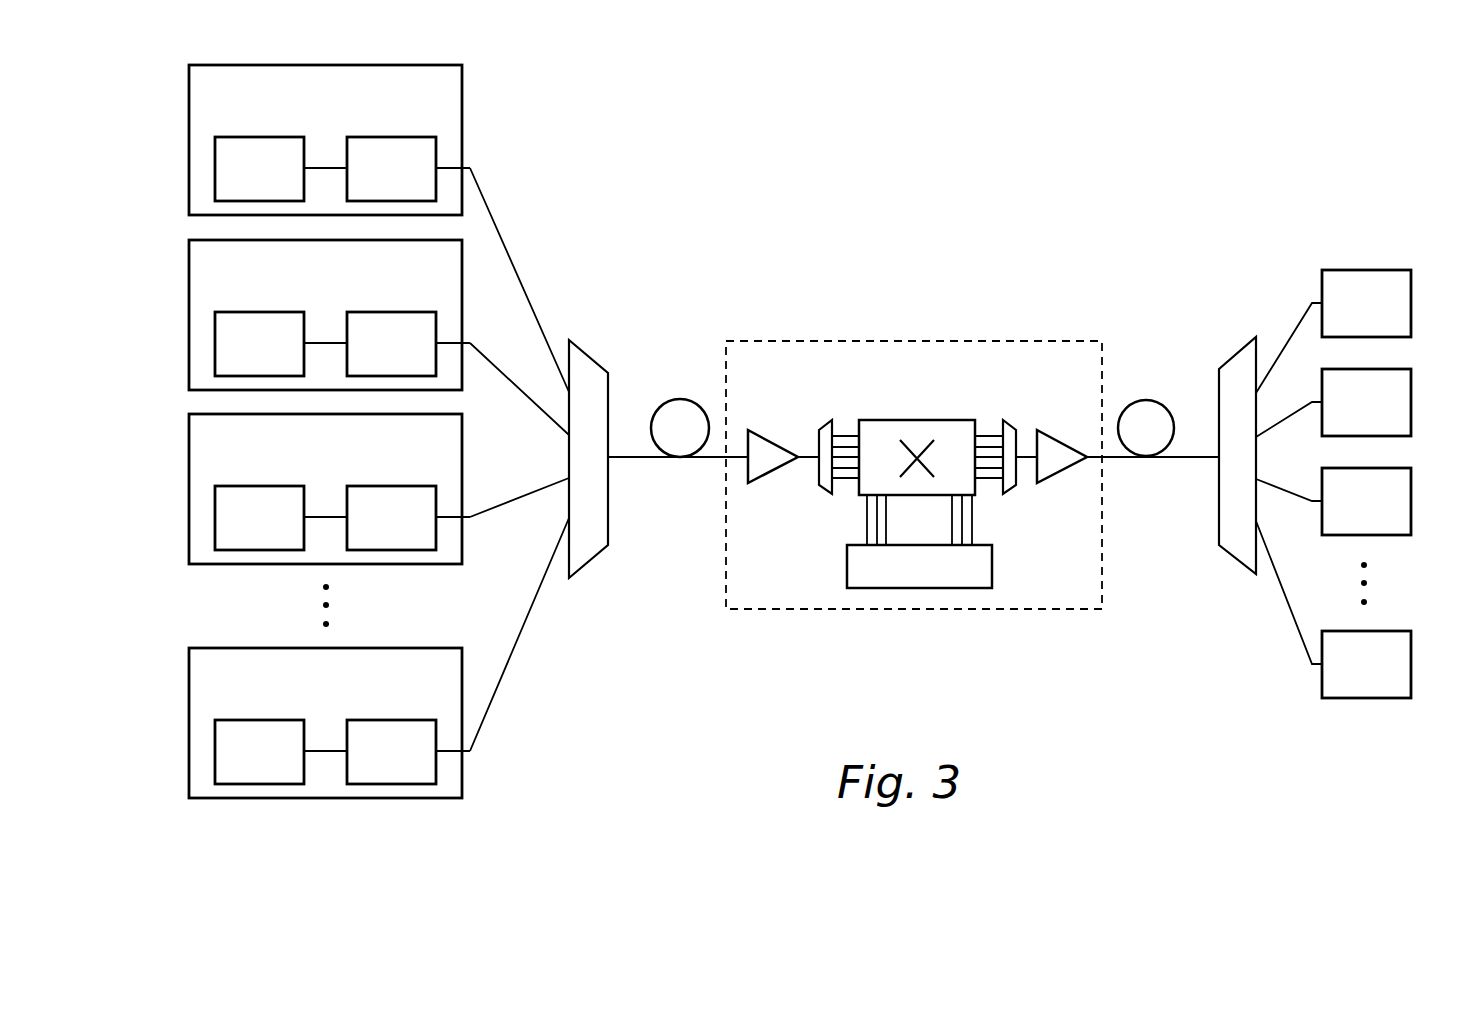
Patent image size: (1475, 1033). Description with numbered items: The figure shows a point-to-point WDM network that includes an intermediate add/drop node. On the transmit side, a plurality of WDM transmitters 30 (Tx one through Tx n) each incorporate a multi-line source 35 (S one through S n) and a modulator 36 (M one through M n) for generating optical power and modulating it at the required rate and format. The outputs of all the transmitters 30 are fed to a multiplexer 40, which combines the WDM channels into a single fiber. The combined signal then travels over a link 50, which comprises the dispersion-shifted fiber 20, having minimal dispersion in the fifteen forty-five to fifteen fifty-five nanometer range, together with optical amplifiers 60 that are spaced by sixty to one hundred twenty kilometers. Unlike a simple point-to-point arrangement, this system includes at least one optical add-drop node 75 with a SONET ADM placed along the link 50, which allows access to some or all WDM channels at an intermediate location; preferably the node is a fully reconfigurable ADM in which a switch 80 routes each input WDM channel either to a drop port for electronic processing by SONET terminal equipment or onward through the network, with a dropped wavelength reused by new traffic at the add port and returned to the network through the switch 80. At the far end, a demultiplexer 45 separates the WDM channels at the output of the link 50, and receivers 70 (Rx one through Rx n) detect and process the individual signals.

The dispersion-shifted fiber 20 is at (676, 400).
The WDM transmitter 30 is at (189, 97).
The multi-line source 35 is at (215, 168).
The modulator 36 is at (436, 148).
The multiplexer 40 is at (590, 563).
The demultiplexer 45 is at (1237, 559).
The link 50 is at (617, 460).
The optical amplifier 60 is at (772, 474).
The receiver 70 is at (1411, 308).
The optical add-drop node 75 is at (937, 341).
The optical switch 80 is at (922, 420).